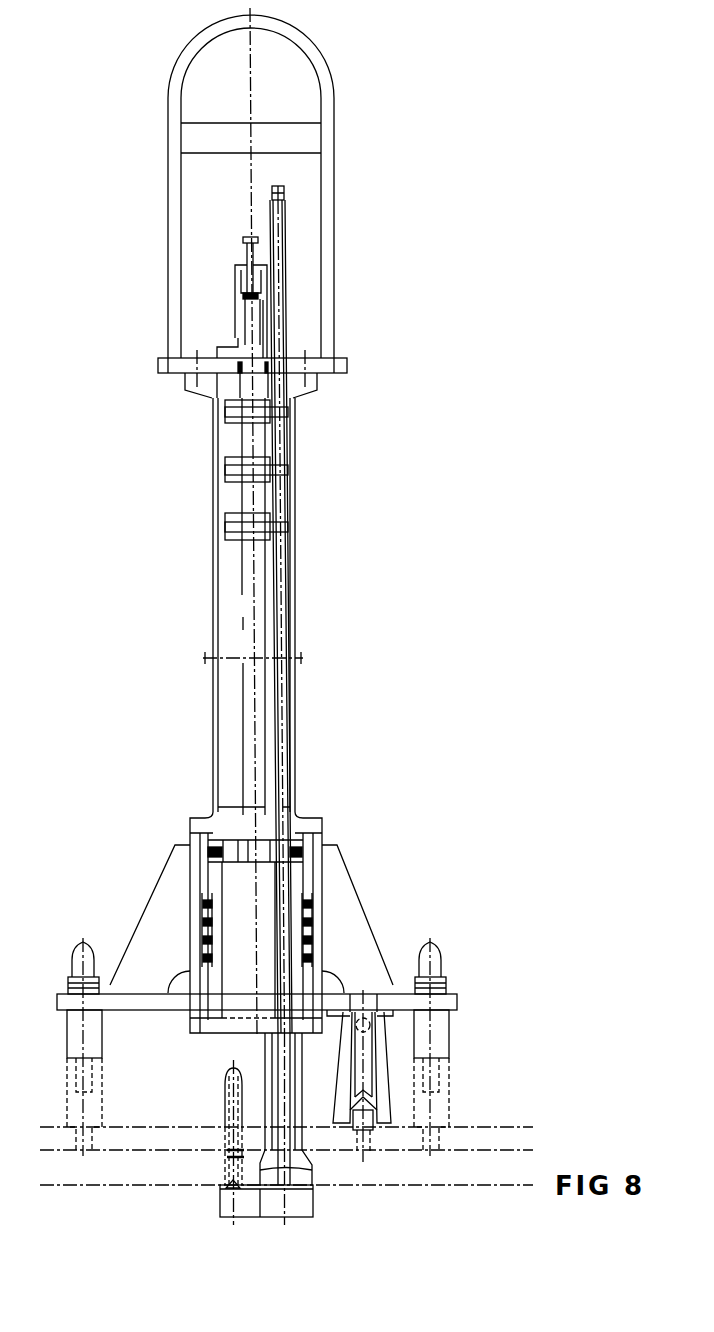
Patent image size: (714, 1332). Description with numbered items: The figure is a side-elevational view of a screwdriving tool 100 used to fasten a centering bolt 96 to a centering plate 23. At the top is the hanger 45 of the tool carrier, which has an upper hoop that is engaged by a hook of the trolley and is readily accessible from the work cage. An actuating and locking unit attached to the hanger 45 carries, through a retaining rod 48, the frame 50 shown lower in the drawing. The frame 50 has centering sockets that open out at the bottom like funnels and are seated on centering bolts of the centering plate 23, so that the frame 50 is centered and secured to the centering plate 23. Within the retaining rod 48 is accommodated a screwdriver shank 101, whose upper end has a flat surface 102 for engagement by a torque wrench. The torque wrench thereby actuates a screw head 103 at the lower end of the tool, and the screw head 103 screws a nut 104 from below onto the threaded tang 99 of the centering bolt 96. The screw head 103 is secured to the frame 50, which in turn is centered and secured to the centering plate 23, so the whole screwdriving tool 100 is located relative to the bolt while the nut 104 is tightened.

The centering plate 23 is at (478, 1144).
The hanger 45 is at (327, 277).
The retaining rod 48 is at (213, 766).
The frame 50 is at (318, 877).
The centering bolt 96 is at (226, 1112).
The threaded tang 99 is at (238, 1189).
The screwdriving tool 100 is at (362, 669).
The screwdriver shank 101 is at (290, 556).
The flat surface 102 is at (286, 195).
The screw head 103 is at (302, 1200).
The nut 104 is at (231, 1182).